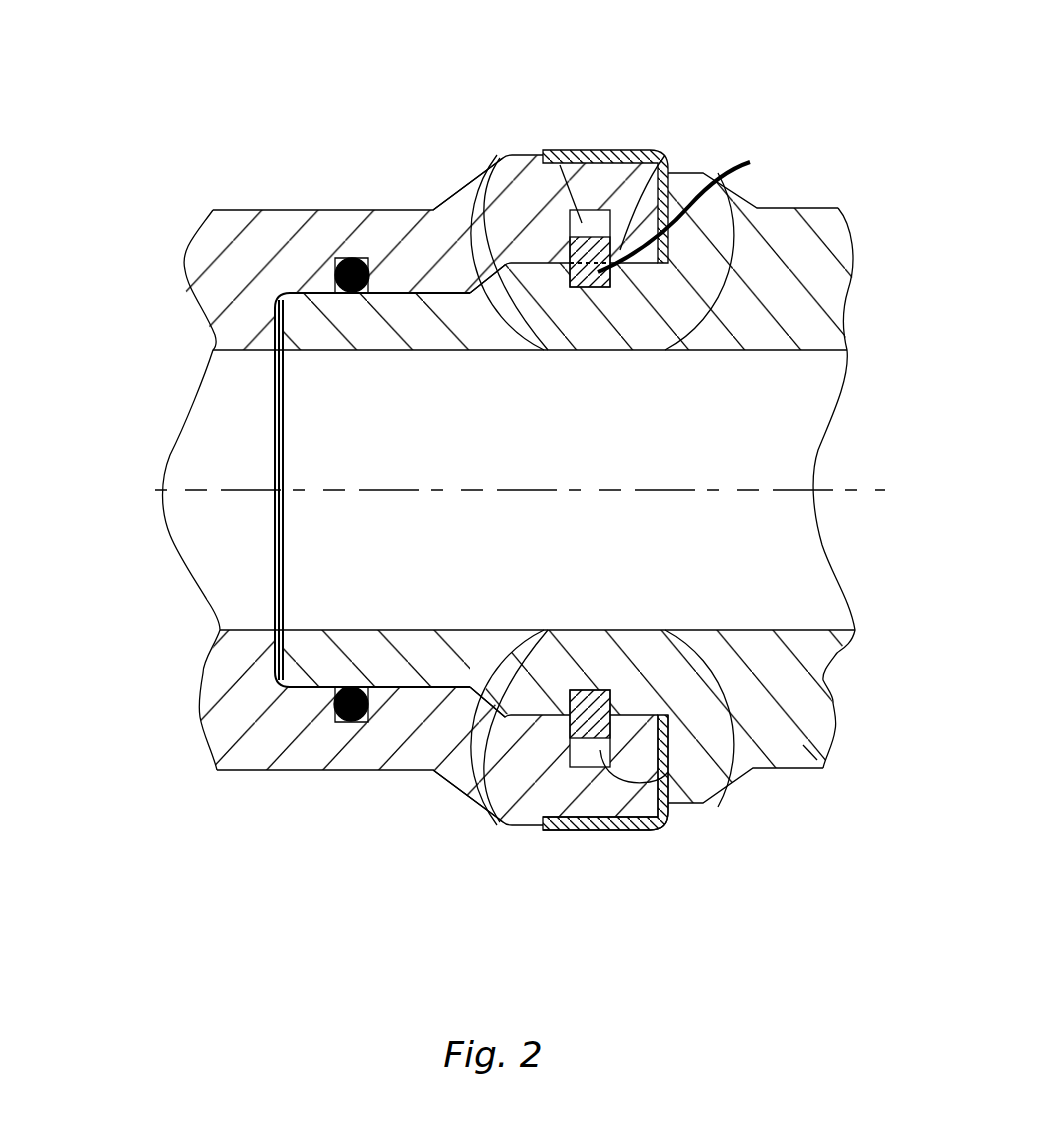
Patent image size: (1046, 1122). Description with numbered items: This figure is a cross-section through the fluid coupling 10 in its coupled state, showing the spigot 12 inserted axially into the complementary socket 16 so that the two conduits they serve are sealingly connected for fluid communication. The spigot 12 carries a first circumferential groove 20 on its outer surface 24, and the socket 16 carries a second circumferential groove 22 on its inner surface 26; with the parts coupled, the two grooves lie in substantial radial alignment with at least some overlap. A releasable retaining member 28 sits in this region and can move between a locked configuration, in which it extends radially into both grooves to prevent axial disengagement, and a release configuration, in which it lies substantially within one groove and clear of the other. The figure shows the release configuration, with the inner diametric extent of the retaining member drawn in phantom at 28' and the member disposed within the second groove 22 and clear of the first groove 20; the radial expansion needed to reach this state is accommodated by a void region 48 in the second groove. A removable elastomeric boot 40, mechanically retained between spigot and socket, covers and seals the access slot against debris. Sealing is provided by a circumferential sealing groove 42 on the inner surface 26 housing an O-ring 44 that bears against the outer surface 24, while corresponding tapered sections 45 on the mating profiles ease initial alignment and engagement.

The fluid coupling 10 is at (163, 130).
The spigot 12 is at (822, 770).
The socket 16 is at (386, 236).
The first circumferential groove 20 is at (700, 238).
The second circumferential groove 22 is at (597, 212).
The outer surface 24 is at (398, 688).
The inner surface 26 is at (550, 263).
The releasable retaining member 28 is at (667, 189).
The inner diametric extent of retaining member 28' is at (698, 208).
The removable elastomeric boot 40 is at (663, 823).
The circumferential sealing groove 42 is at (337, 718).
The O-ring 44 is at (340, 682).
The tapered sections 45 is at (502, 163).
The void region 48 is at (558, 150).